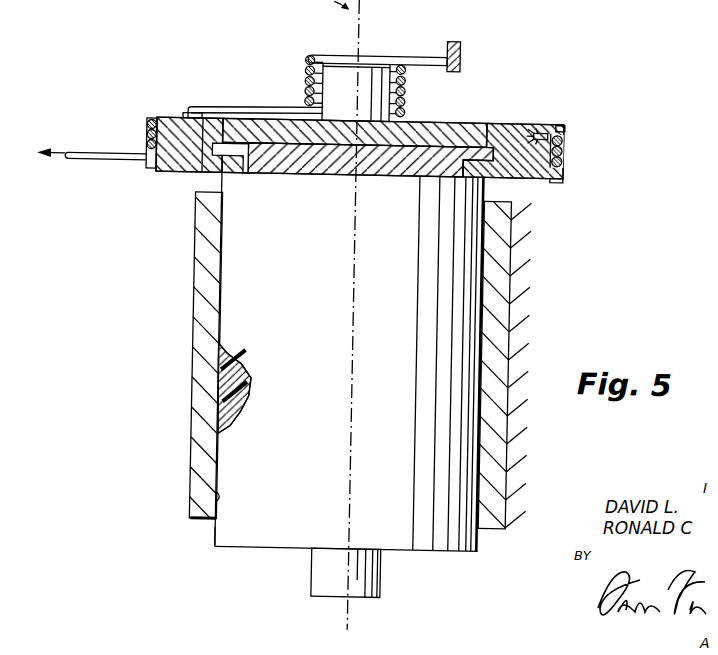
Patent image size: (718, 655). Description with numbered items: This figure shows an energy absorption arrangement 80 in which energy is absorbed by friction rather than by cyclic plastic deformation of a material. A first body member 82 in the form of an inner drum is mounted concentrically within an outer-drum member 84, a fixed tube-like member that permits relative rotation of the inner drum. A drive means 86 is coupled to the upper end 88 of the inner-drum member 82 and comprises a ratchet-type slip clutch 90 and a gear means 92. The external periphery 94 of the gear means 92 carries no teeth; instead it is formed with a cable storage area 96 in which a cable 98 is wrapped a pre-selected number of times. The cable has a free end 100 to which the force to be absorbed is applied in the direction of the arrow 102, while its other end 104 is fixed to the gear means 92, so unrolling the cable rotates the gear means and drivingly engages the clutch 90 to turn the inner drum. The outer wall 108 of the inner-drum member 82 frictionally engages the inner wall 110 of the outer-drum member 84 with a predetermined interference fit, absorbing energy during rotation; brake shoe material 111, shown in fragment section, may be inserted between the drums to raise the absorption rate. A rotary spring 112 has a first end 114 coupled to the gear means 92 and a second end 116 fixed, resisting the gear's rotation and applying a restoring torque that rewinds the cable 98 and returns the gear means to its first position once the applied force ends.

The energy absorption arrangement 80 is at (652, 250).
The first body member 82 is at (296, 551).
The outer-drum member 84 is at (206, 523).
The drive means 86 is at (486, 68).
The upper end 88 is at (391, 55).
The ratchet-type slip clutch 90 is at (425, 121).
The gear means 92 is at (518, 120).
The external periphery 94 is at (565, 126).
The cable storage area 96 is at (566, 166).
The cable 98 is at (563, 153).
The end 100 is at (122, 148).
The arrow 102 is at (57, 164).
The other end 104 is at (542, 128).
The outer wall 108 is at (220, 541).
The inner wall 110 is at (223, 498).
The brake shoe material 111 is at (236, 352).
The rotary spring 112 is at (306, 73).
The first end 114 is at (217, 85).
The second end 116 is at (446, 50).